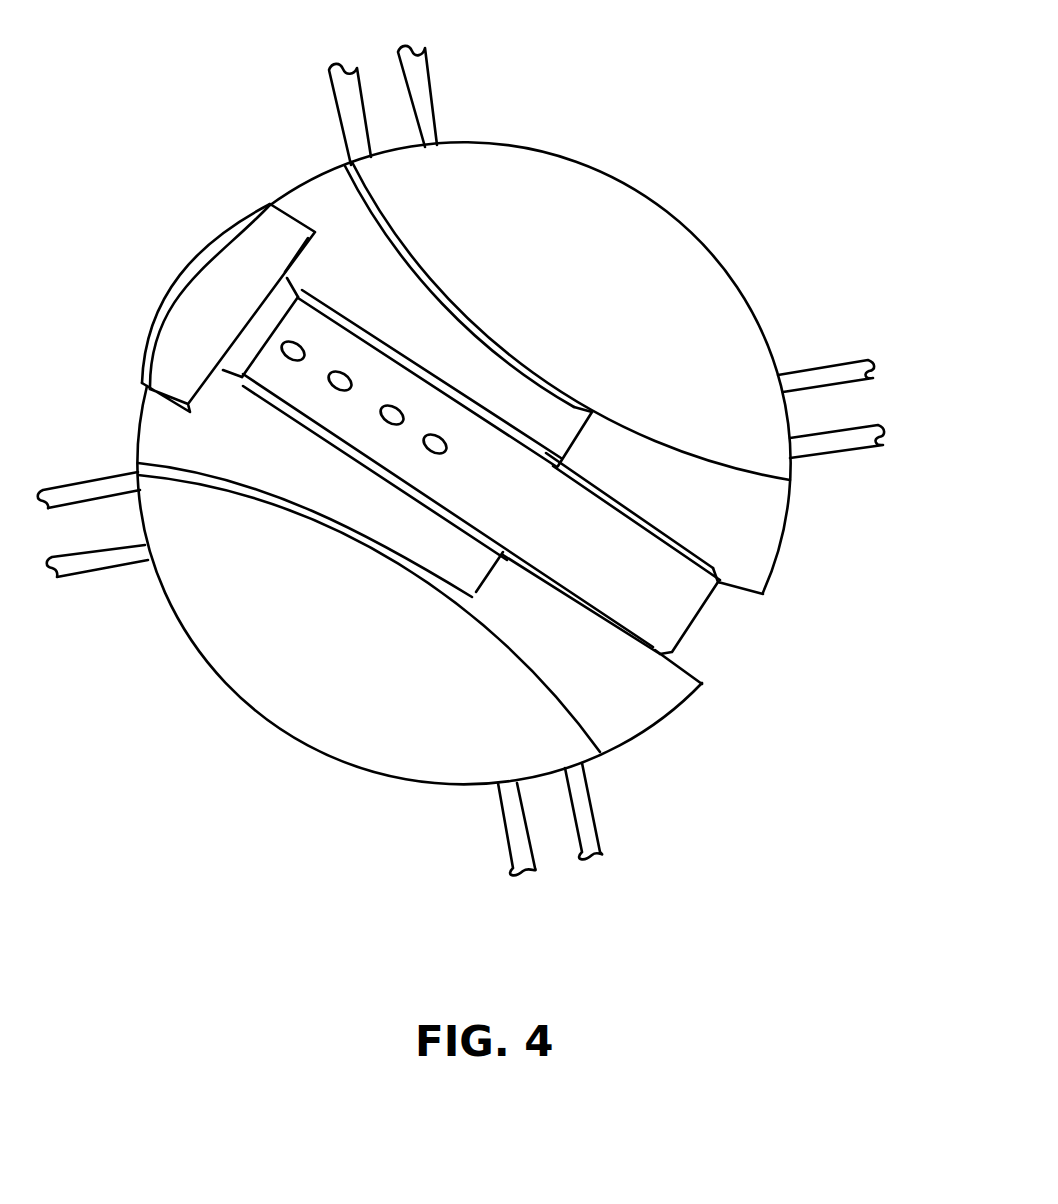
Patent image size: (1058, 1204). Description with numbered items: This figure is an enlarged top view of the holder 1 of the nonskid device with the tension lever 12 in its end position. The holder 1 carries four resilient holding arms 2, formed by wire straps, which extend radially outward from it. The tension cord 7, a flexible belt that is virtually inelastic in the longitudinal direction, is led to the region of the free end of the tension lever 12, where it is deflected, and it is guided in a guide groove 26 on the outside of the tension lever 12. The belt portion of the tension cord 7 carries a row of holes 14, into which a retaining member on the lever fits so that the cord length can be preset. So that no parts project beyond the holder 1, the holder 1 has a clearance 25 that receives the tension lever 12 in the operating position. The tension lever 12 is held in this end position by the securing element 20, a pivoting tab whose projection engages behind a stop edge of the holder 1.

The holder 1 is at (670, 208).
The holding arms 2 is at (425, 93).
The tension cord 7 is at (678, 595).
The tension lever 12 is at (365, 492).
The row of holes 14 is at (392, 413).
The securing element 20 is at (240, 292).
The clearance 25 is at (416, 262).
The guide groove 26 is at (443, 392).